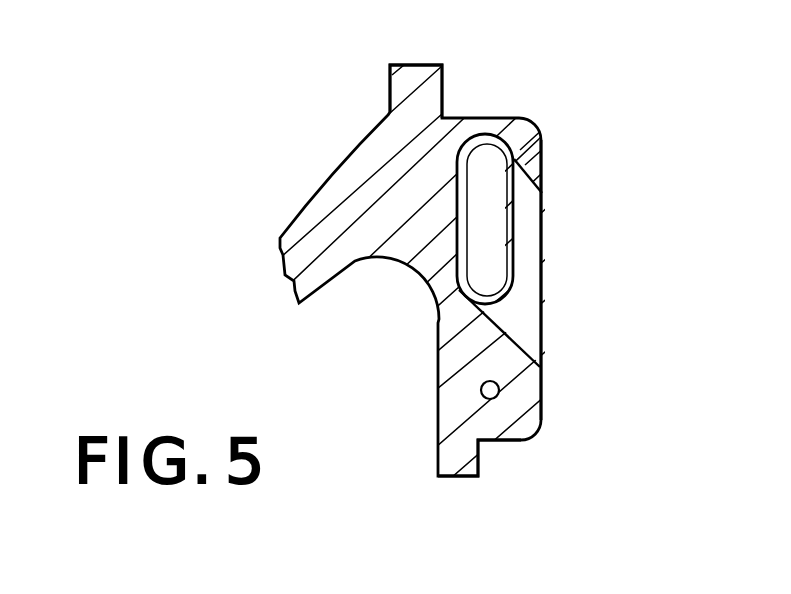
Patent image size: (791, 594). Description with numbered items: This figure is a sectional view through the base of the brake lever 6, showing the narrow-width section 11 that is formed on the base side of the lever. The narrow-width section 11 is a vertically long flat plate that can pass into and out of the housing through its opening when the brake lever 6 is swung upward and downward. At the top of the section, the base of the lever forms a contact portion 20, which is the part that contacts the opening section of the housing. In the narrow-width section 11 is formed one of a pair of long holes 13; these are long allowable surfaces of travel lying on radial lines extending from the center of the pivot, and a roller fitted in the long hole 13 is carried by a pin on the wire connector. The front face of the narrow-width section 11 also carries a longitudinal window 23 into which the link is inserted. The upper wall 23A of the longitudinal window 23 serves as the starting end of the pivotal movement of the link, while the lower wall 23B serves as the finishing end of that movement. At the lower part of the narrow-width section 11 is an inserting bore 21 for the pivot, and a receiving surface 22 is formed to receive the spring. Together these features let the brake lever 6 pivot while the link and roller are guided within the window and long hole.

The brake lever 6 is at (302, 222).
The contact portion 20 is at (446, 99).
The long hole 13 is at (486, 150).
The upper wall 23A is at (520, 159).
The narrow-width section 11 is at (543, 166).
The longitudinal window 23 is at (524, 322).
The lower wall 23B is at (541, 366).
The inserting bore 21 is at (481, 390).
The receiving surface 22 is at (482, 456).